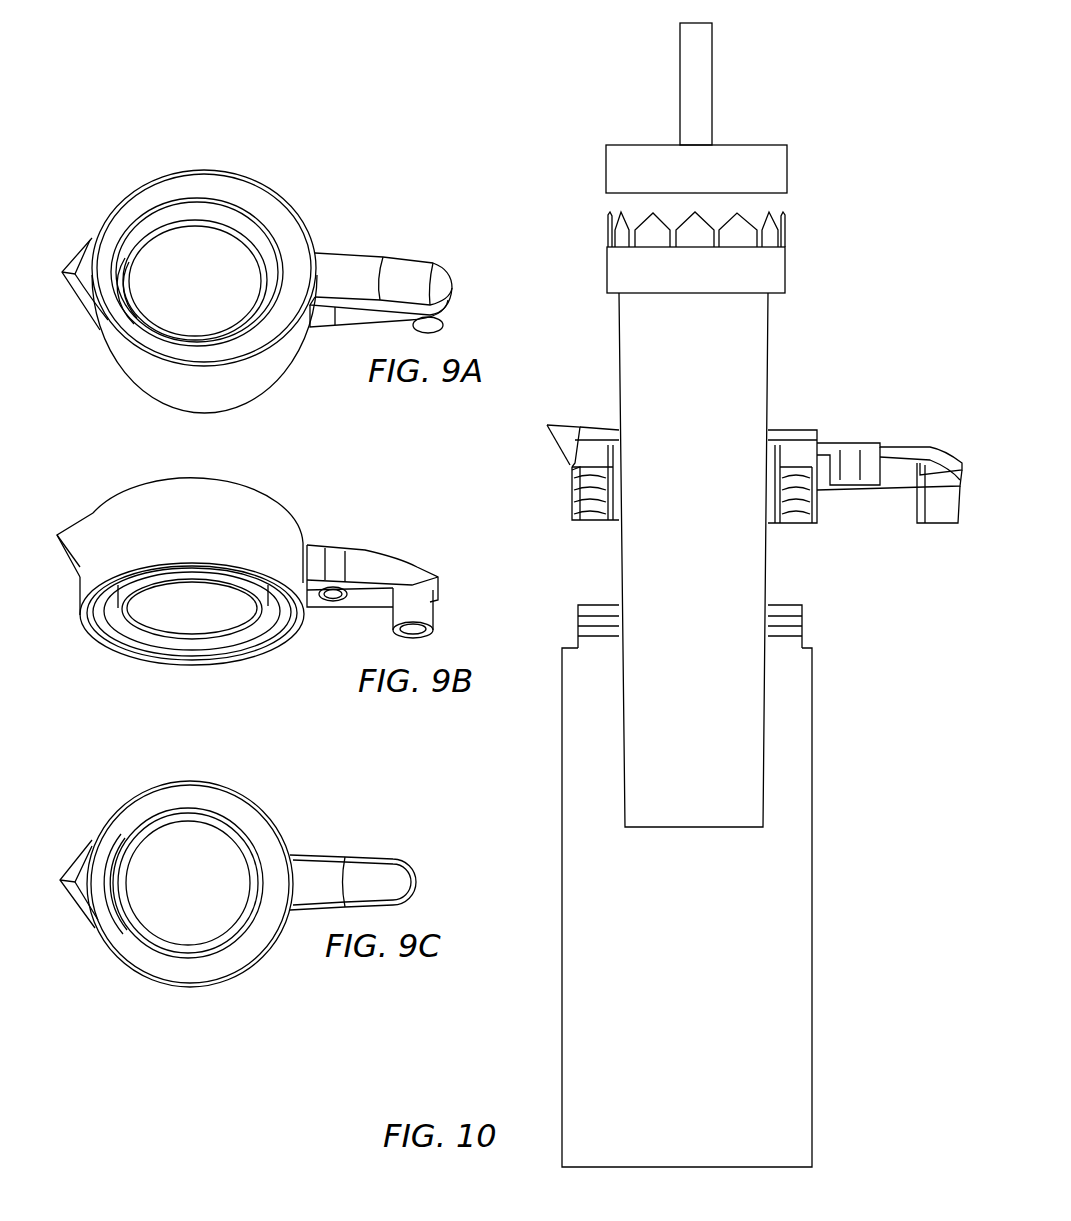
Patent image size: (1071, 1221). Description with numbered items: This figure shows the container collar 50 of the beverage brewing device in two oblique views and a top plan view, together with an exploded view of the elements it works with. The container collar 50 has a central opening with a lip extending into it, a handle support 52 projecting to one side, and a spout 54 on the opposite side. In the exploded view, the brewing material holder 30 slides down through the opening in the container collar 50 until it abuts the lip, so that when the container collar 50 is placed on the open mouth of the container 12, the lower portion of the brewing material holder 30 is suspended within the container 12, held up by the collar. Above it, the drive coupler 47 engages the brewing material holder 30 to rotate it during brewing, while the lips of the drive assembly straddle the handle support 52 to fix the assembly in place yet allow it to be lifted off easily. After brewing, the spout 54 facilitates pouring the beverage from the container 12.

In FIG. 10, the container 12 is at (623, 1039).
In FIG. 10, the brewing material holder 30 is at (705, 594).
In FIG. 10, the drive coupler 47 is at (725, 158).
In FIG. 9A, the container collar 50 is at (314, 166).
In FIG. 9B, the container collar 50 is at (296, 474).
In FIG. 9C, the container collar 50 is at (296, 794).
In FIG. 10, the container collar 50 is at (795, 440).
In FIG. 9A, the handle support 52 is at (345, 272).
In FIG. 9B, the handle support 52 is at (372, 591).
In FIG. 9C, the handle support 52 is at (353, 882).
In FIG. 9A, the spout 54 is at (80, 267).
In FIG. 9B, the spout 54 is at (72, 540).
In FIG. 9C, the spout 54 is at (80, 877).